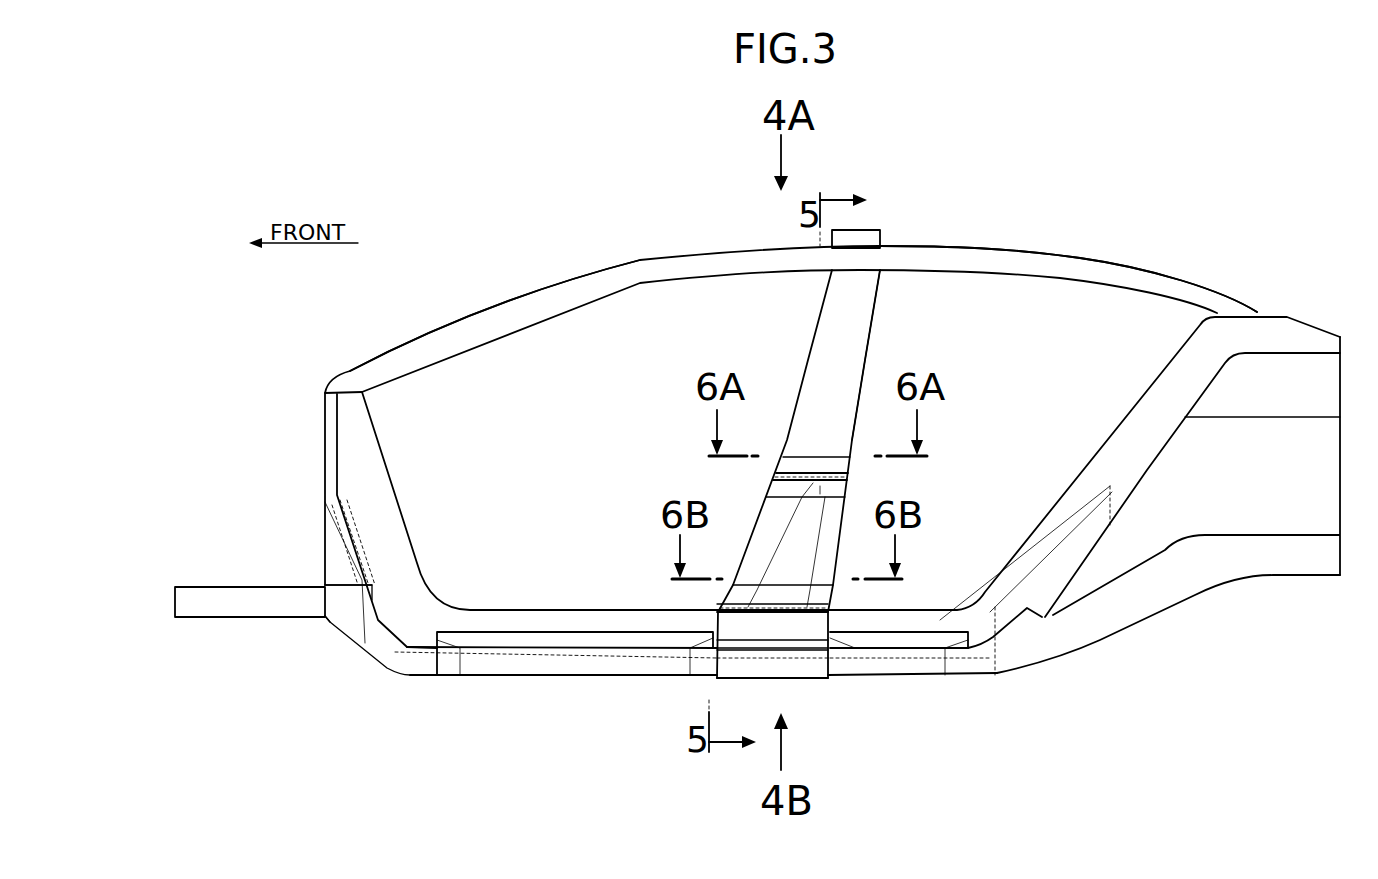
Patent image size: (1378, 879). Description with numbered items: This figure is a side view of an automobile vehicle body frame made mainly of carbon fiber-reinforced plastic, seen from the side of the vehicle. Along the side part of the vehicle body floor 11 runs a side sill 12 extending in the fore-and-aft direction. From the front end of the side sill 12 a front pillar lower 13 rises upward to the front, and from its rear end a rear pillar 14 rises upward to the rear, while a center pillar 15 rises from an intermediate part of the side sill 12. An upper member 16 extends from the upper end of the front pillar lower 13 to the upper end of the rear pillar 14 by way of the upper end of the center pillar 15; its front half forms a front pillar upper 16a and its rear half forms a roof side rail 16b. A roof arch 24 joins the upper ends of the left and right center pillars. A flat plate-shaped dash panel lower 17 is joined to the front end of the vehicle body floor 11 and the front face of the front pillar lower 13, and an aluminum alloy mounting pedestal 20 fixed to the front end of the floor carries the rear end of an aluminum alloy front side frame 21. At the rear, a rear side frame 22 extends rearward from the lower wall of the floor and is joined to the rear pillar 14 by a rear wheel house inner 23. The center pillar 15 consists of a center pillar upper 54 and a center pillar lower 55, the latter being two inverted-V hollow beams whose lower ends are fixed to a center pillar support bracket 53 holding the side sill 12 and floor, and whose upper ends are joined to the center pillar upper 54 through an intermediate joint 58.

The vehicle body floor 11 is at (610, 658).
The side sill 12 is at (540, 628).
The front pillar lower 13 is at (385, 494).
The rear pillar 14 is at (1130, 432).
The center pillar 15 is at (800, 345).
The upper member 16 is at (698, 248).
The front pillar upper 16a is at (590, 276).
The roof side rail 16b is at (990, 258).
The dash panel lower 17 is at (318, 437).
The mounting pedestal 20 is at (323, 614).
The front side frame 21 is at (235, 612).
The rear side frame 22 is at (1208, 578).
The rear wheel house inner 23 is at (1285, 508).
The roof arch 24 is at (876, 228).
The center pillar support bracket 53 is at (790, 660).
The center pillar upper 54 is at (847, 330).
The center pillar lower 55 is at (828, 535).
The intermediate joint 58 is at (815, 468).